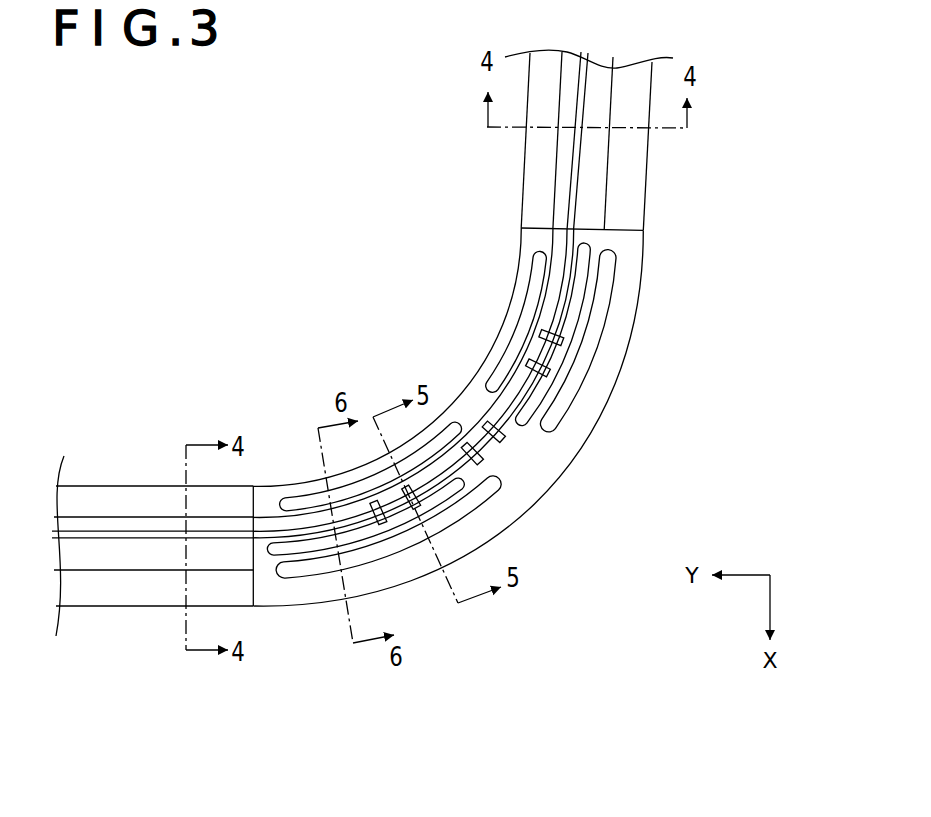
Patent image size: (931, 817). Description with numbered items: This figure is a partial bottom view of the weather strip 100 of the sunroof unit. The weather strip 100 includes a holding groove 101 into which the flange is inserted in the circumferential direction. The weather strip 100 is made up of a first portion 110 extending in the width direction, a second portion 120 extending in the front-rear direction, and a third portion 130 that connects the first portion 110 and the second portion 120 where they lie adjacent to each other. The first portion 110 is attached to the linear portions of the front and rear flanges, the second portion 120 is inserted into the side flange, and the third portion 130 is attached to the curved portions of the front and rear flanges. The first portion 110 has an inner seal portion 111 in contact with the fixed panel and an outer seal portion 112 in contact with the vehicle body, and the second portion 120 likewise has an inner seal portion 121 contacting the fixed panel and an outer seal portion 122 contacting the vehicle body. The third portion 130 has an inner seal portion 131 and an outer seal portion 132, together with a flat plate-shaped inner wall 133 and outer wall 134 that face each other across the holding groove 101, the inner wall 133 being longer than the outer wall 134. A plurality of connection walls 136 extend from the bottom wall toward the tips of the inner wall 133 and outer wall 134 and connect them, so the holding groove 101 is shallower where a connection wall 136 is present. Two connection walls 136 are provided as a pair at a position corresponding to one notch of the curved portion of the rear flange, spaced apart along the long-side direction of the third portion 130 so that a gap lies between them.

The weather strip 100 is at (751, 148).
The holding groove 101 is at (102, 530).
The first portion 110 is at (650, 205).
The inner seal portion 111 is at (146, 484).
The outer seal portion 112 is at (150, 610).
The second portion 120 is at (92, 482).
The inner seal portion 121 is at (522, 181).
The outer seal portion 122 is at (644, 176).
The third portion 130 is at (640, 316).
The inner seal portion 131 is at (520, 252).
The outer seal portion 132 is at (645, 265).
The inner wall 133 is at (520, 380).
The outer wall 134 is at (492, 446).
The connection wall 136 is at (552, 345).